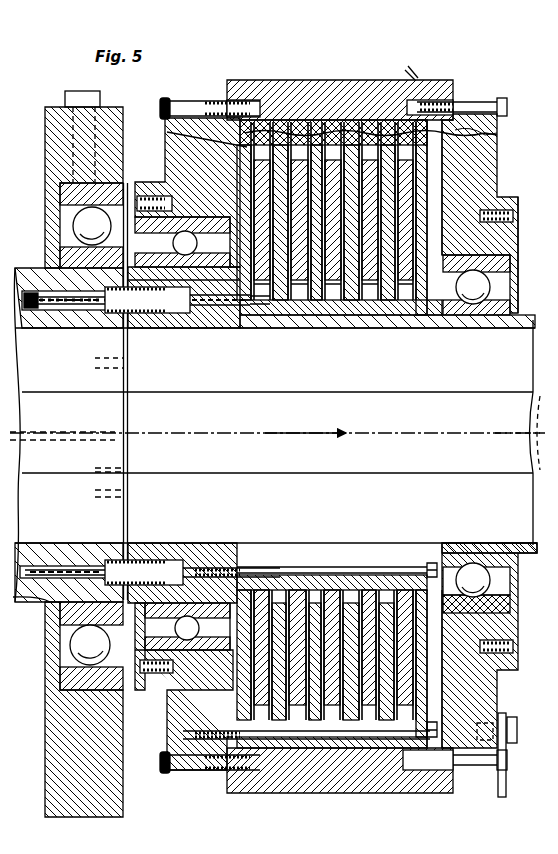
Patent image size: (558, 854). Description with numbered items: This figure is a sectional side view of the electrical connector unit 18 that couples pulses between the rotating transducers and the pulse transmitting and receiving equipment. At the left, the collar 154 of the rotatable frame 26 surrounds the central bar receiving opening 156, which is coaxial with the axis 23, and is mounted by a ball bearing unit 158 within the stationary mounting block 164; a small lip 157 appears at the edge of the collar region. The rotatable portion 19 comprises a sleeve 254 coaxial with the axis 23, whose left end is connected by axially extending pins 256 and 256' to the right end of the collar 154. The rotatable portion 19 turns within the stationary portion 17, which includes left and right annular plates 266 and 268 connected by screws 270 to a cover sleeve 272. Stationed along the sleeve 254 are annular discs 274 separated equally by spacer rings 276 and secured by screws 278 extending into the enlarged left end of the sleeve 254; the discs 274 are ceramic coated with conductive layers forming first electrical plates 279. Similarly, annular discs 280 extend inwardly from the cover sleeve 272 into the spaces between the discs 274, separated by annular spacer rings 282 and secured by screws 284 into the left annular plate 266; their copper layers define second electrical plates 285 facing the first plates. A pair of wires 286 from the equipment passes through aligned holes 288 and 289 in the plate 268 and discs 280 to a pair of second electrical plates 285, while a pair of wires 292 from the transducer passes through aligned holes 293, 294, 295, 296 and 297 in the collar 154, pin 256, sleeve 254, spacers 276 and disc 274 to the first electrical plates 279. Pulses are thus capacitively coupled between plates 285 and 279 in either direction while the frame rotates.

The stationary portion 17 is at (503, 168).
The connector unit 18 is at (423, 67).
The rotatable portion 19 is at (210, 556).
The axis 23 is at (25, 433).
The frame 26 is at (35, 266).
The collar 154 is at (66, 332).
The central bar receiving opening 156 is at (25, 543).
The lip 157 is at (13, 597).
The ball bearing unit 158 is at (60, 655).
The stationary mounting block 164 is at (57, 174).
The sleeve 254 is at (425, 322).
The axially extending pin 256 is at (133, 391).
The rod 256' is at (97, 367).
The left annular plate 266 is at (175, 160).
The right annular plate 268 is at (498, 196).
The screw 270 is at (192, 100).
The cover sleeve 272 is at (300, 80).
The annular disc 274 is at (278, 300).
The spacer ring 276 is at (257, 300).
The screw 278 is at (405, 570).
The first electrical plate 279 is at (185, 330).
The annular disc 280 is at (240, 710).
The annular spacer ring 282 is at (272, 122).
The screw 284 is at (385, 740).
The second electrical plate 285 is at (247, 147).
The wire 286 is at (498, 135).
The hole 288 is at (504, 104).
The hole 289 is at (412, 112).
The wire 292 is at (82, 312).
The hole 293 is at (48, 312).
The hole 294 is at (160, 314).
The hole 295 is at (160, 318).
The hole 296 is at (240, 312).
The hole 297 is at (262, 305).